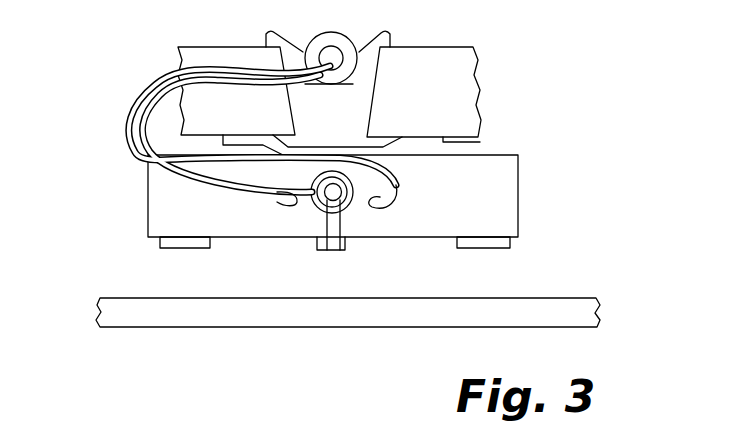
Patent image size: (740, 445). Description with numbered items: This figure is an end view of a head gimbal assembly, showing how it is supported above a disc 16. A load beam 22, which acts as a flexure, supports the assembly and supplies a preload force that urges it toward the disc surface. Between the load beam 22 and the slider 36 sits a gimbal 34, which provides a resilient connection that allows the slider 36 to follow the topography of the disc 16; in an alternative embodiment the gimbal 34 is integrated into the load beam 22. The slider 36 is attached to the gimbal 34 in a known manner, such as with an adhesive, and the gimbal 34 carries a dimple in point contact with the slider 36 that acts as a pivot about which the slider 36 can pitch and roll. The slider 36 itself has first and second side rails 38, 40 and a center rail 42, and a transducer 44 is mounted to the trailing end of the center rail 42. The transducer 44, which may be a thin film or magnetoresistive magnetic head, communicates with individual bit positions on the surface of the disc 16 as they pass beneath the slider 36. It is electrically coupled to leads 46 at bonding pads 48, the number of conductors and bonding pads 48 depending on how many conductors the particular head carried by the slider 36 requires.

The disc 16 is at (277, 298).
The load beam 22 is at (441, 34).
The gimbal 34 is at (480, 142).
The slider 36 is at (526, 187).
The first side rail 38 is at (160, 253).
The second side rail 40 is at (503, 262).
The center rail 42 is at (350, 248).
The transducer 44 is at (326, 252).
The leads 46 is at (150, 93).
The bonding pads 48 is at (278, 206).